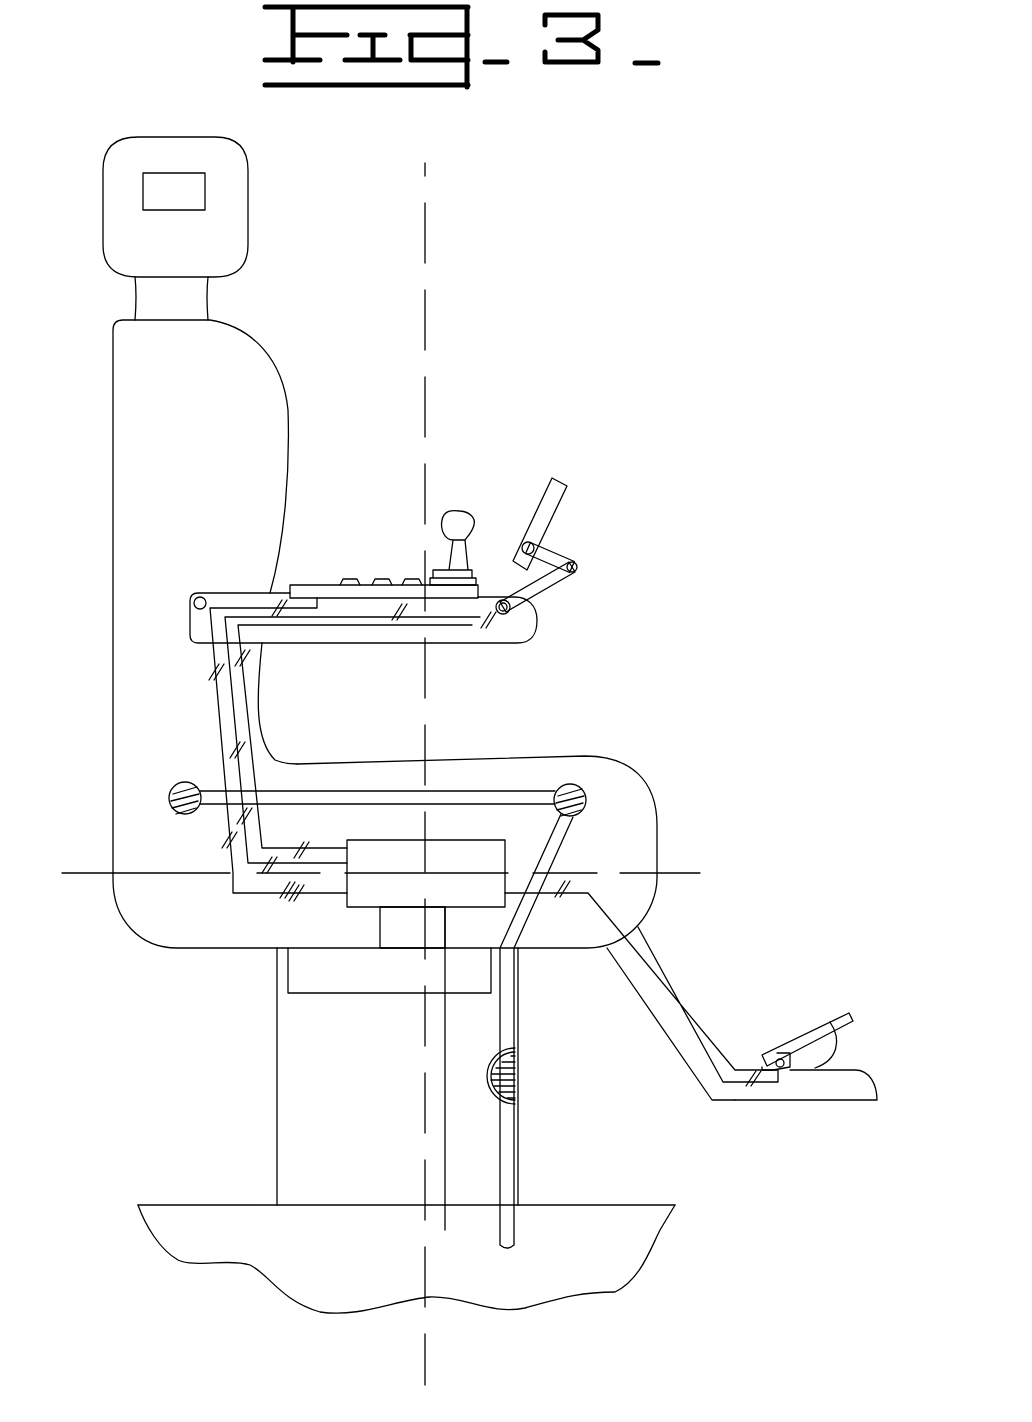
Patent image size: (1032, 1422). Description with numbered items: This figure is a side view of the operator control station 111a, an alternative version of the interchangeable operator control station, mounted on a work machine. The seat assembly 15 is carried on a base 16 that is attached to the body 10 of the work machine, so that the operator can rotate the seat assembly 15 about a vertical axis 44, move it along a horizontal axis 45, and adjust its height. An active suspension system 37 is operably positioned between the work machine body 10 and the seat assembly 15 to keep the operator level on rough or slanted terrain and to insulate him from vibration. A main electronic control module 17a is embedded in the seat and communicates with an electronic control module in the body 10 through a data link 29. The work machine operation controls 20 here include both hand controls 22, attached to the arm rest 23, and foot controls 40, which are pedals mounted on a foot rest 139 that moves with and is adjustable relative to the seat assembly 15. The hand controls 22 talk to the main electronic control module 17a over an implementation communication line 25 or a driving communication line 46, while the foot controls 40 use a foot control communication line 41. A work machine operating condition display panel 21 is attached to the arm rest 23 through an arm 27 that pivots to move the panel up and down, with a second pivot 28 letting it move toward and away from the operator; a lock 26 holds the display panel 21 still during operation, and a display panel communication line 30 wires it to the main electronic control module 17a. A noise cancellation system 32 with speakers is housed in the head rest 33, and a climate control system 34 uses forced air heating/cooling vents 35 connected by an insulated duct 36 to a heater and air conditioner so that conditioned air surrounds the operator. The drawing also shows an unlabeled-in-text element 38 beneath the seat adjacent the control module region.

The body 10 is at (220, 1203).
The seat assembly 15 is at (113, 465).
The base 16 is at (277, 1093).
The main electronic control module 17a is at (437, 840).
The work machine operation controls 20 is at (470, 603).
The work machine operating condition display panel 21 is at (560, 507).
The hand controls 22 is at (443, 542).
The arm rest 23 is at (374, 645).
The implementation communication line 25 is at (238, 735).
The lock 26 is at (515, 613).
The arm 27 is at (543, 585).
The second pivot 28 is at (580, 567).
The data link 29 is at (458, 1238).
The display panel communication line 30 is at (255, 785).
The noise cancellation system 32 is at (207, 197).
The head rest 33 is at (248, 225).
The climate control system 34 is at (575, 786).
The forced air heating/cooling vents 35 is at (517, 1072).
The duct 36 is at (508, 1000).
The active suspension system 37 is at (287, 975).
The bracket 38 is at (378, 930).
The foot controls 40 is at (840, 1025).
The foot control communication line 41 is at (642, 960).
The vertical axis 44 is at (425, 433).
The horizontal axis 45 is at (745, 880).
The driving communication line 46 is at (210, 662).
The operator control station 111a is at (548, 316).
The foot rest 139 is at (787, 1095).